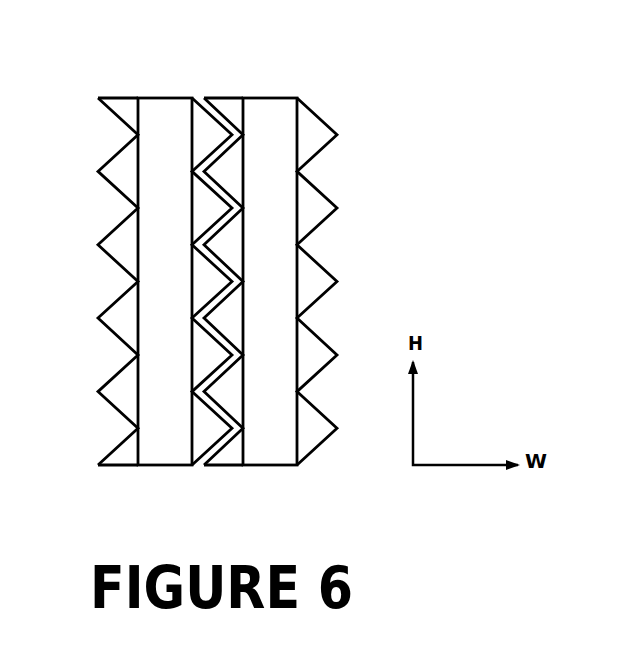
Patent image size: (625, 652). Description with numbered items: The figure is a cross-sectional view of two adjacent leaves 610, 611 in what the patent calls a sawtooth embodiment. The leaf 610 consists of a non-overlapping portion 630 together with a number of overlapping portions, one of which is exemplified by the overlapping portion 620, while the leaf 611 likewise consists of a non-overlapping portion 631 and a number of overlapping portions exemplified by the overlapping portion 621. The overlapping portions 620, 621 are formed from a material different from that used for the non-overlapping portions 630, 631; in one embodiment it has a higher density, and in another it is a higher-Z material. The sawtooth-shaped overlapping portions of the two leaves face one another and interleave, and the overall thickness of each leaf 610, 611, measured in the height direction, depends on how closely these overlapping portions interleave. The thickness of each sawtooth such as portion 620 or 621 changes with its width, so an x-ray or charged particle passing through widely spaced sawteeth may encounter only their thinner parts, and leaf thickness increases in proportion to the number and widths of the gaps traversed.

The leaf 610 is at (155, 95).
The leaf 611 is at (278, 90).
The overlapping portion 620 is at (205, 135).
The overlapping portion 621 is at (228, 112).
The non-overlapping portion 630 is at (183, 292).
The non-overlapping portion 631 is at (287, 292).